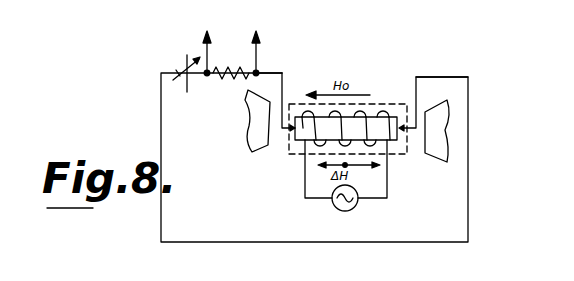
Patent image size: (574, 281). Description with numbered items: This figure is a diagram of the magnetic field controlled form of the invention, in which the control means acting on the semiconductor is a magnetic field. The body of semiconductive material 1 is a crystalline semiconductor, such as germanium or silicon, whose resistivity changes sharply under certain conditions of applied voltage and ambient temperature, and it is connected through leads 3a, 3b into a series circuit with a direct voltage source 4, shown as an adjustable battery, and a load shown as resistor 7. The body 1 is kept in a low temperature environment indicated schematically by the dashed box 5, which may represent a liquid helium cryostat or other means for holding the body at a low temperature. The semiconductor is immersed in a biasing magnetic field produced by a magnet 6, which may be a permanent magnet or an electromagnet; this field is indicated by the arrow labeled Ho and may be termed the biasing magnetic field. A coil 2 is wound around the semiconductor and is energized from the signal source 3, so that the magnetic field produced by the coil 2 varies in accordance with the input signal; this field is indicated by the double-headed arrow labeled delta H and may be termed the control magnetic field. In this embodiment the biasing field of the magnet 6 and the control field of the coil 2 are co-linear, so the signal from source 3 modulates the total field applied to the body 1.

The body of semiconductive material 1 is at (302, 116).
The coil 2 is at (371, 116).
The signal source 3 is at (355, 207).
The lead 3a is at (266, 72).
The lead 3b is at (437, 76).
The direct voltage source 4 is at (190, 93).
The dashed box 5 is at (398, 104).
The magnet 6 is at (253, 154).
The load resistor 7 is at (233, 79).